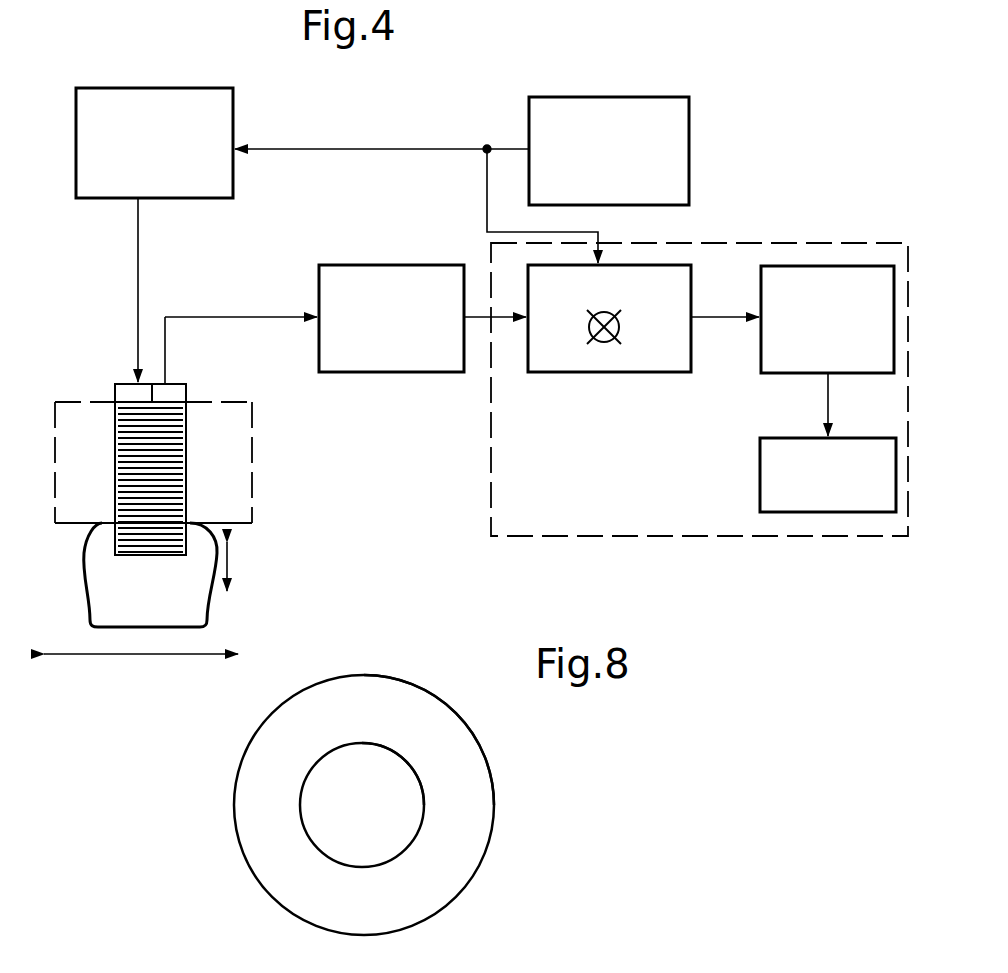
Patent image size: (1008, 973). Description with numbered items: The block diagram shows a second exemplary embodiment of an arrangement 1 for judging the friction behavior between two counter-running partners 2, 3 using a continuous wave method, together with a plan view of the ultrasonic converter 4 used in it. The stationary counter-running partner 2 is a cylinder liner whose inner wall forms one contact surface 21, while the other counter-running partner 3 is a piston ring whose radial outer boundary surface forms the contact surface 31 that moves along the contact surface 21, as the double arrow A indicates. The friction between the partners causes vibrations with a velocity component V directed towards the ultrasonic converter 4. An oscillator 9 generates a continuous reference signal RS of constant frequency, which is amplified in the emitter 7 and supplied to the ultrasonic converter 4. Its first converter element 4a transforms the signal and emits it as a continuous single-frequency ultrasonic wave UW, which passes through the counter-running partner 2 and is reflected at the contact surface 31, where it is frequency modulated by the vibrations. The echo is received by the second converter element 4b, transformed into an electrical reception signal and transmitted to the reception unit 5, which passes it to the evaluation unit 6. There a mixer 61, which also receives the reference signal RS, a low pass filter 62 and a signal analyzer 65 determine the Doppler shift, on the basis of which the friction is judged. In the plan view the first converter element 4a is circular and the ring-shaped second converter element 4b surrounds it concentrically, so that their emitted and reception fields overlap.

In FIG. 4, the arrangement 1 is at (776, 157).
In FIG. 4, the counter-running partner 2 is at (83, 410).
In FIG. 4, the counter-running partner 3 is at (188, 612).
In FIG. 4, the ultrasonic converter 4 is at (115, 385).
In FIG. 8, the ultrasonic converter 4 is at (579, 742).
In FIG. 8, the first converter element 4a is at (408, 817).
In FIG. 8, the second converter element 4b is at (433, 722).
In FIG. 4, the reception unit 5 is at (318, 272).
In FIG. 4, the evaluation unit 6 is at (532, 536).
In FIG. 4, the emitter 7 is at (77, 128).
In FIG. 4, the oscillator 9 is at (529, 116).
In FIG. 4, the contact surface 21 is at (242, 525).
In FIG. 4, the contact surface 31 is at (102, 523).
In FIG. 4, the mixer 61 is at (681, 265).
In FIG. 4, the low pass filter 62 is at (867, 266).
In FIG. 4, the signal analyzer 65 is at (783, 512).
In FIG. 4, the reference signal RS is at (416, 188).
In FIG. 4, the ultrasonic wave UW is at (185, 427).
In FIG. 4, the velocity component V is at (230, 572).
In FIG. 4, the double arrow A is at (145, 654).